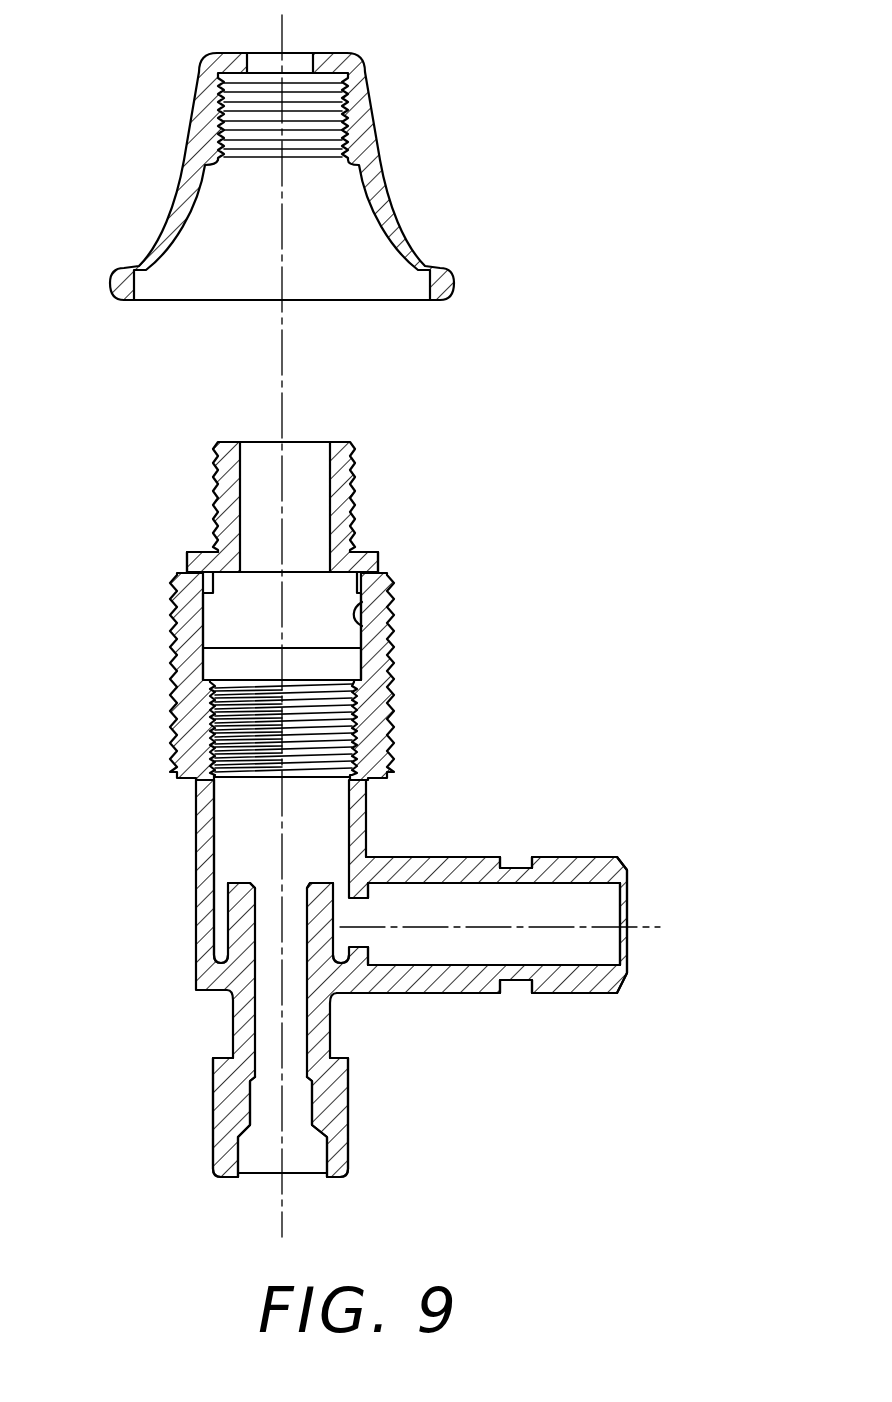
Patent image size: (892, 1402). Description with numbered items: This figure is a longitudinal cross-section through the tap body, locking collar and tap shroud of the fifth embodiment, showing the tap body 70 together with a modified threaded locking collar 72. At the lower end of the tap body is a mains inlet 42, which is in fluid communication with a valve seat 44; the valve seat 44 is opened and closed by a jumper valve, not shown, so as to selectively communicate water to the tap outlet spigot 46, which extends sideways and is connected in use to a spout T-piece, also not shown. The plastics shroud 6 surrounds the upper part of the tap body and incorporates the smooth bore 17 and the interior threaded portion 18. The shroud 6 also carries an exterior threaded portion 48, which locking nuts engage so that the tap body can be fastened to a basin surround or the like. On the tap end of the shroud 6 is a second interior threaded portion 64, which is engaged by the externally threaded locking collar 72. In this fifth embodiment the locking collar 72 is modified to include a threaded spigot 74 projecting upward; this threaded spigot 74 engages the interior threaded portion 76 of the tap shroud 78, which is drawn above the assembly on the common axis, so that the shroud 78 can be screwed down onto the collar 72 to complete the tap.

The tap shroud 78 is at (319, 176).
The interior threaded portion 76 is at (244, 132).
The tap body 70 is at (456, 474).
The threaded spigot 74 is at (289, 507).
The threaded locking collar 72 is at (380, 560).
The second interior threaded portion 64 is at (380, 617).
The exterior threaded portion 48 is at (177, 722).
The interior threaded portion 18 is at (320, 733).
The smooth bore 17 is at (214, 800).
The shroud 6 is at (407, 1017).
The valve seat 44 is at (312, 868).
The tap outlet spigot 46 is at (602, 910).
The mains inlet 42 is at (263, 1157).